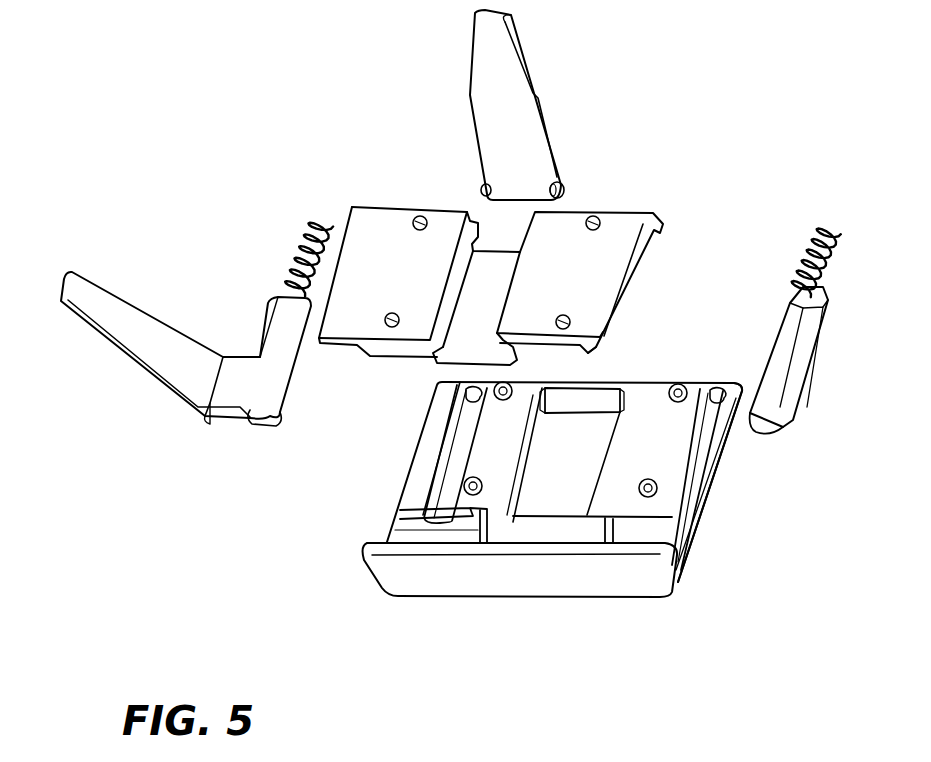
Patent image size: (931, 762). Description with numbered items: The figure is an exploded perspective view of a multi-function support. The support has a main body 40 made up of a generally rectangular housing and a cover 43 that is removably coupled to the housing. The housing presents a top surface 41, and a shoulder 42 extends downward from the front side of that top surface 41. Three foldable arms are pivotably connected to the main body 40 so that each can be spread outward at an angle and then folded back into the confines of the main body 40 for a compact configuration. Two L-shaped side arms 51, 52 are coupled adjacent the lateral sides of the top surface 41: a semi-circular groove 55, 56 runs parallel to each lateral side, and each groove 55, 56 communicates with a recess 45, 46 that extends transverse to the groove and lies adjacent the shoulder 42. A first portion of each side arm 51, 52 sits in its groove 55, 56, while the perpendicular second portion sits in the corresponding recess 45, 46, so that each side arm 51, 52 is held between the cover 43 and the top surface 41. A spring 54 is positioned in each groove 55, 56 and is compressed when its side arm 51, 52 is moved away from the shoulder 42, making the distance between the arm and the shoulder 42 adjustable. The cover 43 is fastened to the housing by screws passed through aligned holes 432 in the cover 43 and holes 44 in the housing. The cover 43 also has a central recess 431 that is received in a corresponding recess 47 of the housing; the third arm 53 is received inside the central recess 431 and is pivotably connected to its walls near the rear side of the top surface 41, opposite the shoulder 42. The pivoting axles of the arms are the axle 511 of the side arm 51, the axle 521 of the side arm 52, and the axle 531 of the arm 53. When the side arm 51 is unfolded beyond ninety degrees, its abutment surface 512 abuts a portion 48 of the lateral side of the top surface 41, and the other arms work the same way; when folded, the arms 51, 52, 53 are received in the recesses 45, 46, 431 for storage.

The main body 40 is at (398, 470).
The top surface 41 is at (688, 578).
The shoulder 42 is at (538, 590).
The cover 43 is at (614, 287).
The central recess 431 is at (457, 343).
The holes 432 is at (598, 218).
The holes 44 is at (677, 384).
The recess 45 is at (430, 533).
The recess 46 is at (655, 538).
The recess 47 is at (600, 378).
The portion of the lateral side of the top surface 48 is at (398, 513).
The side arm 51 is at (150, 305).
The pivoting axle 511 is at (253, 423).
The abutment surface 512 is at (205, 420).
The side arm 52 is at (805, 395).
The pivoting axle 521 is at (762, 428).
The arm 53 is at (478, 113).
The pivoting axle 531 is at (565, 187).
The spring 54 is at (295, 243).
The semi-circular groove 55 is at (463, 448).
The semi-circular groove 56 is at (695, 450).